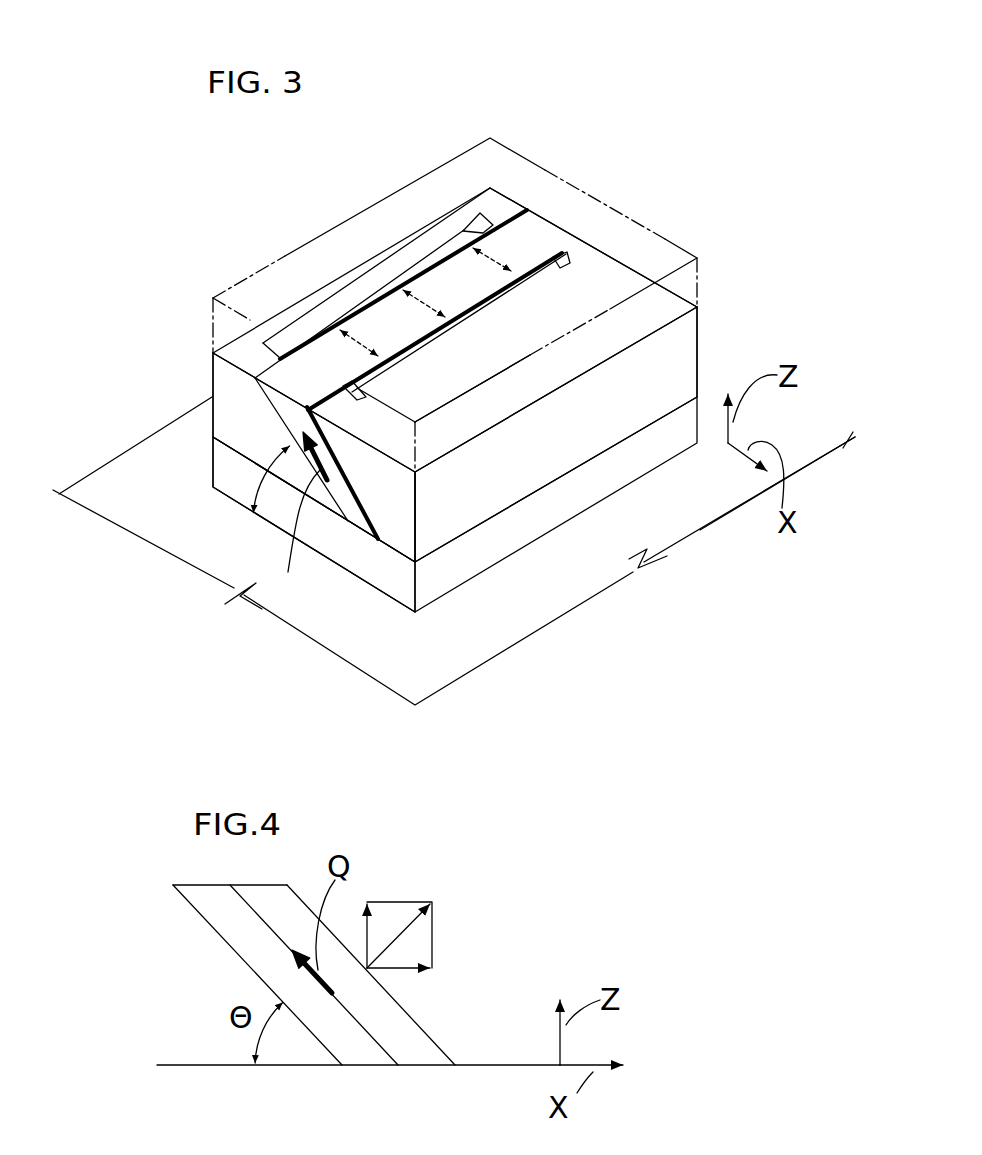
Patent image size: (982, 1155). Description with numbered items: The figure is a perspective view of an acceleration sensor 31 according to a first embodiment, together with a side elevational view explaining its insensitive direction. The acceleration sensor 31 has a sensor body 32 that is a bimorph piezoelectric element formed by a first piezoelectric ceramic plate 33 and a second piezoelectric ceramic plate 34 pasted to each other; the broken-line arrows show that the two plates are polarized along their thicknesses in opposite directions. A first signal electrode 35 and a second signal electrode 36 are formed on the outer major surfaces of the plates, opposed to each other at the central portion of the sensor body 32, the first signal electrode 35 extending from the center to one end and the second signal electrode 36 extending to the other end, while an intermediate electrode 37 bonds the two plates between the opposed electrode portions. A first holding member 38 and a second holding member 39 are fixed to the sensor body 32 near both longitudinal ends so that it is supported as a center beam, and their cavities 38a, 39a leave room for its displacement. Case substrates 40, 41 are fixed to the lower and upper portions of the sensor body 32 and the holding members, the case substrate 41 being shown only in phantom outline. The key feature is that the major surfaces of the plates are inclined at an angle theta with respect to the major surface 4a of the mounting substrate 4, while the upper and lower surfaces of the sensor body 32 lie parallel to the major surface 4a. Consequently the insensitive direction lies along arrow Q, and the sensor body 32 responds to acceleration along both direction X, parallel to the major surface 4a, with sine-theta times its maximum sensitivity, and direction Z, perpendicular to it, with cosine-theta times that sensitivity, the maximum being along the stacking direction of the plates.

In FIG. 3, the mounting substrate 4 is at (126, 482).
In FIG. 3, the major surface of mounting substrate 4a is at (700, 508).
In FIG. 3, the acceleration sensor 31 is at (244, 236).
In FIG. 3, the sensor body 32 is at (549, 211).
In FIG. 4, the sensor body 32 is at (193, 934).
In FIG. 3, the first piezoelectric ceramic plate 33 is at (363, 314).
In FIG. 3, the second piezoelectric ceramic plate 34 is at (397, 331).
In FIG. 3, the first signal electrode 35 is at (538, 283).
In FIG. 3, the second signal electrode 36 is at (430, 262).
In FIG. 3, the intermediate electrode 37 is at (467, 231).
In FIG. 3, the first holding member 38 is at (211, 387).
In FIG. 3, the cavity of first holding member 38a is at (458, 278).
In FIG. 3, the second holding member 39 is at (677, 360).
In FIG. 3, the cavity of second holding member 39a is at (545, 308).
In FIG. 3, the case substrate 40 is at (212, 462).
In FIG. 3, the case substrate 41 is at (210, 317).